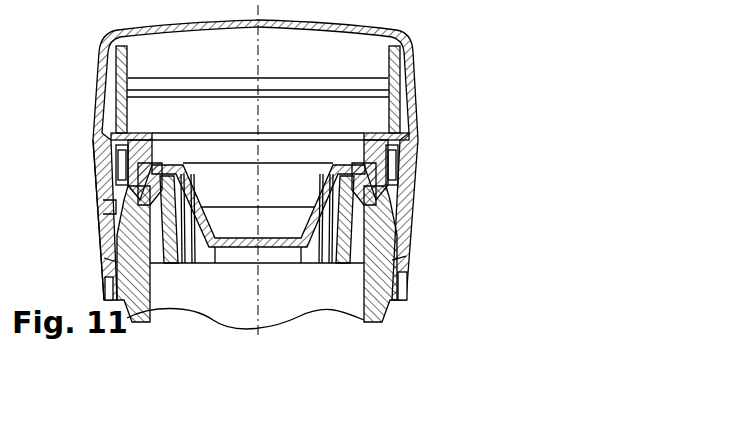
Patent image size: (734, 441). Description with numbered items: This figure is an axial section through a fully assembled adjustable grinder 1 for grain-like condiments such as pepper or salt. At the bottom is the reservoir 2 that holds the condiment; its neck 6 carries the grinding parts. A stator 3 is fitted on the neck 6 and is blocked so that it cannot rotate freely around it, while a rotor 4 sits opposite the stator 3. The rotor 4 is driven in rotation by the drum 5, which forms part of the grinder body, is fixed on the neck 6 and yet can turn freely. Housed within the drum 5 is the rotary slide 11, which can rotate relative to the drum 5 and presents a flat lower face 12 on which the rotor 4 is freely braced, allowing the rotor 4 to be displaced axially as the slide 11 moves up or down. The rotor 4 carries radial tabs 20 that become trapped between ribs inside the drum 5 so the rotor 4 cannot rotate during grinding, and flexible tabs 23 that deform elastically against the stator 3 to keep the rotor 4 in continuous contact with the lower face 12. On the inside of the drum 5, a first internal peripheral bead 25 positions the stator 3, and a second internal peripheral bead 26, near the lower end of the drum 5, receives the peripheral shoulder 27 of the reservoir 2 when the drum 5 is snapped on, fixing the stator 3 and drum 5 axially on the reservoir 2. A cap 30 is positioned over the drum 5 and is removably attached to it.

The adjustable grinder 1 is at (72, 52).
The reservoir 2 is at (245, 303).
The stator 3 is at (274, 253).
The rotor 4 is at (240, 250).
The drum 5 is at (93, 220).
The neck 6 is at (103, 241).
The rotary slide 11 is at (258, 107).
The lower face 12 is at (100, 125).
The radial tabs 20 is at (97, 162).
The flexible tabs 23 is at (103, 186).
The first internal peripheral bead 25 is at (103, 206).
The second internal peripheral bead 26 is at (105, 281).
The peripheral shoulder 27 is at (108, 260).
The cap 30 is at (326, 22).